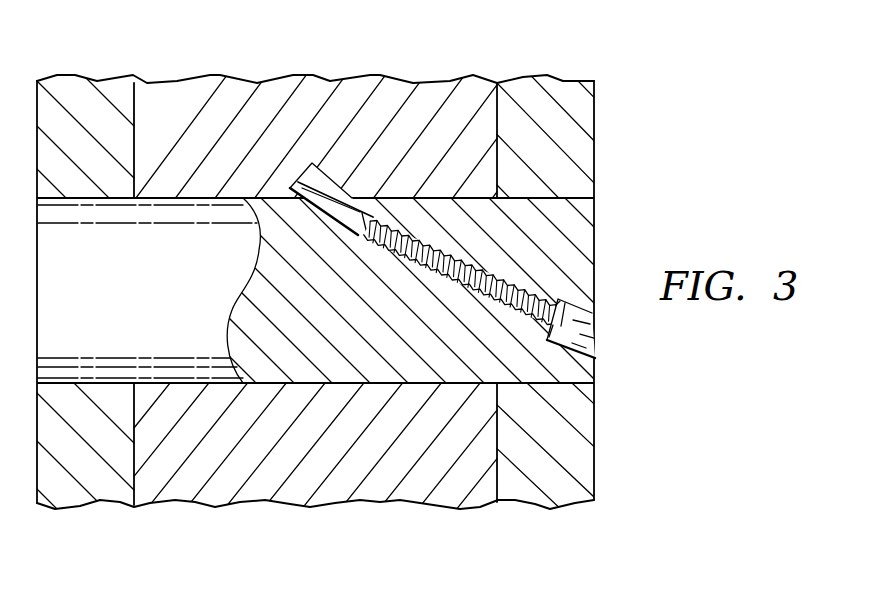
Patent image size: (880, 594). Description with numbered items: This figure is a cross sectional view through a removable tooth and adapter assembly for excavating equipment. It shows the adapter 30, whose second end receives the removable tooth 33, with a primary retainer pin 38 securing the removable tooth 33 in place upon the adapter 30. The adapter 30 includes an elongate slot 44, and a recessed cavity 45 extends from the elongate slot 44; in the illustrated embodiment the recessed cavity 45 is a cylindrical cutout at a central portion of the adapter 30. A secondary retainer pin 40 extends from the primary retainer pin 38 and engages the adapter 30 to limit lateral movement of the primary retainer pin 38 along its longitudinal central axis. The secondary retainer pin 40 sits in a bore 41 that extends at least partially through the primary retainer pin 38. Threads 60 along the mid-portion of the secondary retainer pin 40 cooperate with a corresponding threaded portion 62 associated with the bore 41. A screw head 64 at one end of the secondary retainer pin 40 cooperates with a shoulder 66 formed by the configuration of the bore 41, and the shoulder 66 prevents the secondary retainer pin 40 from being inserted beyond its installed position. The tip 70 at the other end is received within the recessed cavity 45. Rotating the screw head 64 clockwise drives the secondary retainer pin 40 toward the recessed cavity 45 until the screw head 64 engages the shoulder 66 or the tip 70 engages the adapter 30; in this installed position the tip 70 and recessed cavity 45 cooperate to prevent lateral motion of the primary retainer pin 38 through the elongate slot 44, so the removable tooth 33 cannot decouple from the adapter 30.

The adapter 30 is at (250, 68).
The removable tooth 33 is at (604, 120).
The primary retainer pin 38 is at (588, 235).
The secondary retainer pin 40 is at (595, 333).
The bore 41 is at (343, 233).
The elongate slot 44 is at (149, 300).
The recessed cavity 45 is at (318, 176).
The threads 60 is at (413, 272).
The threaded portion 62 is at (465, 291).
The screw head 64 is at (547, 338).
The shoulder 66 is at (562, 295).
The tip 70 is at (327, 211).